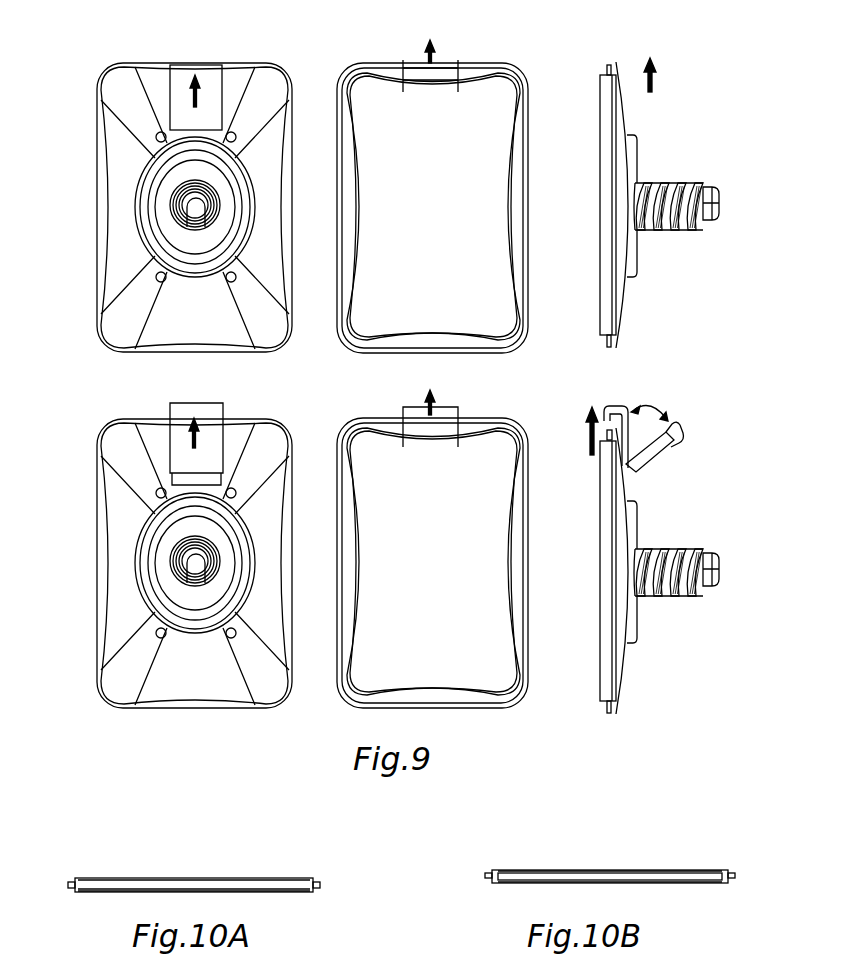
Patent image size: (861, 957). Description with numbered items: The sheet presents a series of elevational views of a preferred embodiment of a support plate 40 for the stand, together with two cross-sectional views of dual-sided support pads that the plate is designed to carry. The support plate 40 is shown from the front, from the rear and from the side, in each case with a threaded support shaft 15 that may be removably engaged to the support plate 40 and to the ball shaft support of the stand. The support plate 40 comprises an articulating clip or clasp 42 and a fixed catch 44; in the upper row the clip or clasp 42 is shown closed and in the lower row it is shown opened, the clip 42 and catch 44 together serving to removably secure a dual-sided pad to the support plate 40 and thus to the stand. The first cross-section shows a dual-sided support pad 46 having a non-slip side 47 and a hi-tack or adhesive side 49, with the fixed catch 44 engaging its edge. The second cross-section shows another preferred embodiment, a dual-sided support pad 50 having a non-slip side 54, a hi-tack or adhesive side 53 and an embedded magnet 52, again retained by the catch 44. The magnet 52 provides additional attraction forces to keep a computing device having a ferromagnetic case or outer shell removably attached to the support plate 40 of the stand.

In FIG. 9, the threaded support shaft 15 is at (195, 208).
In FIG. 9, the support plate 40 is at (125, 306).
In FIG. 9, the articulating clip or clasp 42 is at (202, 68).
In FIG. 9, the fixed catch 44 is at (455, 340).
In FIG. 10A, the fixed catch 44 is at (75, 880).
In FIG. 10B, the fixed catch 44 is at (492, 872).
In FIG. 9, the dual-sided support pad 46 is at (495, 105).
In FIG. 10A, the dual-sided support pad 46 is at (257, 897).
In FIG. 10A, the non-slip side 47 is at (110, 893).
In FIG. 10A, the hi-tack or adhesive side 49 is at (127, 883).
In FIG. 10B, the dual-sided support pad 50 is at (673, 889).
In FIG. 10B, the magnet 52 is at (657, 872).
In FIG. 10B, the hi-tack or adhesive side 53 is at (553, 869).
In FIG. 10B, the non-slip side 54 is at (533, 885).